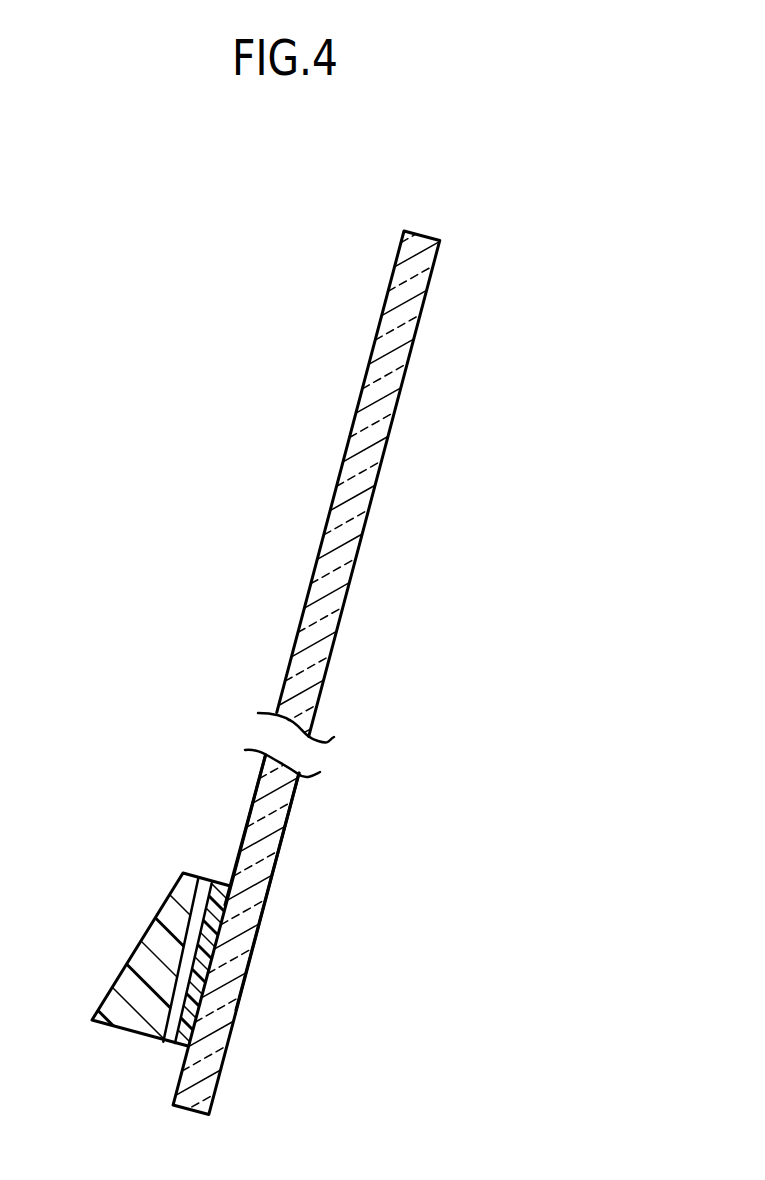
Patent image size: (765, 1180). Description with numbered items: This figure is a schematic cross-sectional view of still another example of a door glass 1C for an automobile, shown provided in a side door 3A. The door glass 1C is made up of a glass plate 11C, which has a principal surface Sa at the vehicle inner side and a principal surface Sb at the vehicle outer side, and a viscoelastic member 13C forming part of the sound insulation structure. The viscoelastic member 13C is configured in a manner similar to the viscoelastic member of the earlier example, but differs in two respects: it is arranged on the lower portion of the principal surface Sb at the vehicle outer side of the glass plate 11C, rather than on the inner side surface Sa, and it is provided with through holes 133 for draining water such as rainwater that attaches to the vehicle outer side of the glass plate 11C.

The side door 3A is at (508, 298).
The door glass 1C is at (284, 481).
The glass plate 11C is at (174, 1082).
The viscoelastic member 13C is at (123, 950).
The through holes 133 is at (194, 935).
The principal surface Sa is at (294, 800).
The principal surface Sb is at (246, 826).